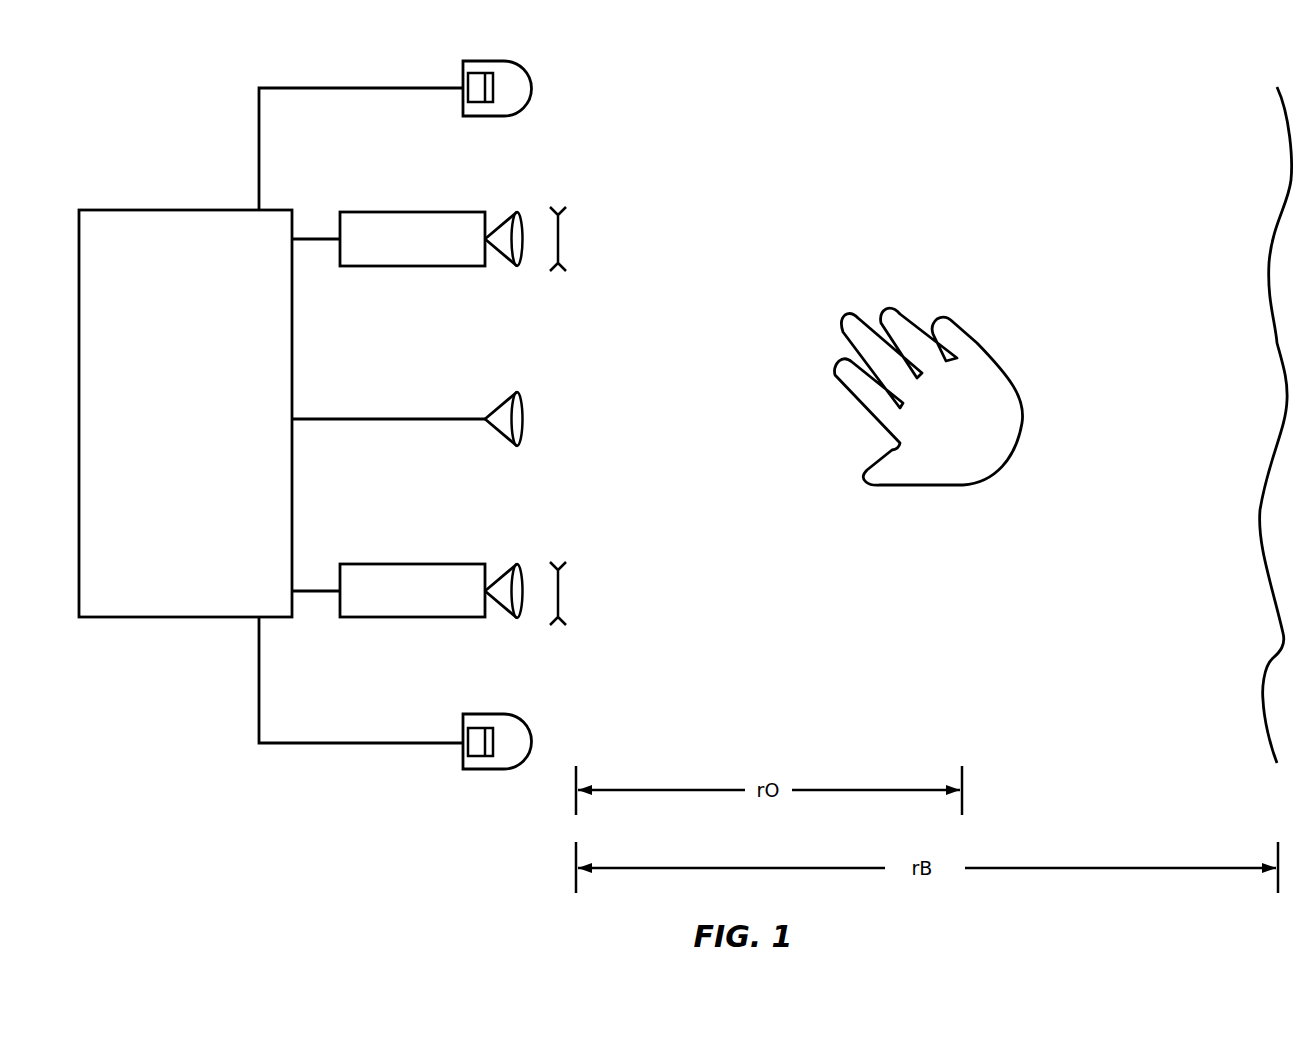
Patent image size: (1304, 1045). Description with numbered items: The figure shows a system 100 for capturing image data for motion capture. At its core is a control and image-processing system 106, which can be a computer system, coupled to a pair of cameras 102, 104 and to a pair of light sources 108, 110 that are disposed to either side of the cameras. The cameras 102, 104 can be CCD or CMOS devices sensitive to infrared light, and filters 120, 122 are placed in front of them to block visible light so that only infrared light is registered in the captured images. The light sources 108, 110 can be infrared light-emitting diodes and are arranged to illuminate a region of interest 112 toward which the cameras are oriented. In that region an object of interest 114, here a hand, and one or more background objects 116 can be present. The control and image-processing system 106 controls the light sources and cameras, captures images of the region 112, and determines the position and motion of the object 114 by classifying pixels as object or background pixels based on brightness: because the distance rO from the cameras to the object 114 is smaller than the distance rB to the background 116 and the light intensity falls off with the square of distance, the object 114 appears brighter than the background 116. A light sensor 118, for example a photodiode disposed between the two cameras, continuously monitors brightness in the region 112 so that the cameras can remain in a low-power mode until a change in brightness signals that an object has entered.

The system 100 is at (1251, 45).
The camera 102 is at (410, 212).
The camera 104 is at (410, 564).
The control and image-processing system 106 is at (157, 210).
The light source 108 is at (518, 60).
The light source 110 is at (518, 713).
The region of interest 112 is at (753, 600).
The object of interest 114 is at (987, 360).
The background object 116 is at (1277, 343).
The light sensor 118 is at (405, 419).
The filter 120 is at (558, 242).
The filter 122 is at (558, 596).